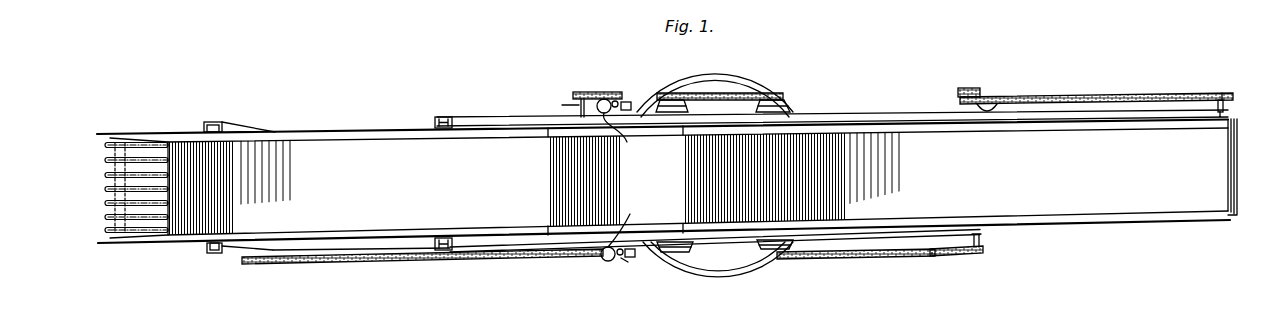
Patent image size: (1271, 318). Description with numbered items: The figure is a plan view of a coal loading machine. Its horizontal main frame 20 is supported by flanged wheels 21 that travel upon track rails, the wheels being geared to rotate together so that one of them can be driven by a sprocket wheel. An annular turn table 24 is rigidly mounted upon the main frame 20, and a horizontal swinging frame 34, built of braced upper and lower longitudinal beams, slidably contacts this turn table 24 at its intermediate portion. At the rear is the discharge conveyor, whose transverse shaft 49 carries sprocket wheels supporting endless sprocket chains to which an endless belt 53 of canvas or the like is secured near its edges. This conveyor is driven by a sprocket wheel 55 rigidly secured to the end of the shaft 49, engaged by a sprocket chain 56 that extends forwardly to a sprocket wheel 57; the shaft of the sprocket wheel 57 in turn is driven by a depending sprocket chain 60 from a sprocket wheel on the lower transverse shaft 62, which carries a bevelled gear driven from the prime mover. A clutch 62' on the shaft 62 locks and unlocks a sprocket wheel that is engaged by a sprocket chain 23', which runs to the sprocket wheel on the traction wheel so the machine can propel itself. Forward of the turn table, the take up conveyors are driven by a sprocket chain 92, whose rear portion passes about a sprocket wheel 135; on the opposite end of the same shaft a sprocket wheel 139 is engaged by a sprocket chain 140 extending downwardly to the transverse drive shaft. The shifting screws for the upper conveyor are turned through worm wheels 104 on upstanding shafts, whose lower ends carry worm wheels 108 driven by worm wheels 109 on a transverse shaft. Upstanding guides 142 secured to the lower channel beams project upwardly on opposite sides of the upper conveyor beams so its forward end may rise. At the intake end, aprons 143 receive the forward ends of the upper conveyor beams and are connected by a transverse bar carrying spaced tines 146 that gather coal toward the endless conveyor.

The main frame 20 is at (845, 116).
The wheels 21 is at (684, 97).
The sprocket chain 23' is at (856, 265).
The annular turn table 24 is at (715, 277).
The horizontal swinging frame 34 is at (499, 246).
The transverse shaft 49 is at (1224, 104).
The endless belt 53 is at (667, 181).
The sprocket wheel 55 is at (1215, 94).
The sprocket chain 56 is at (1060, 97).
The sprocket wheel 57 is at (990, 105).
The sprocket chain 60 is at (975, 85).
The lower transverse shaft 62 is at (995, 240).
The clutch 62' is at (980, 262).
The sprocket chain 92 is at (379, 264).
The worm wheels 104 is at (632, 180).
The worm wheels 108 is at (619, 102).
The worm wheels 109 is at (633, 259).
The sprocket wheel 135 is at (553, 106).
The sprocket wheel 139 is at (582, 92).
The sprocket chain 140 is at (598, 91).
The upstanding guides 142 is at (228, 111).
The aprons 143 is at (172, 247).
The tines 146 is at (138, 228).